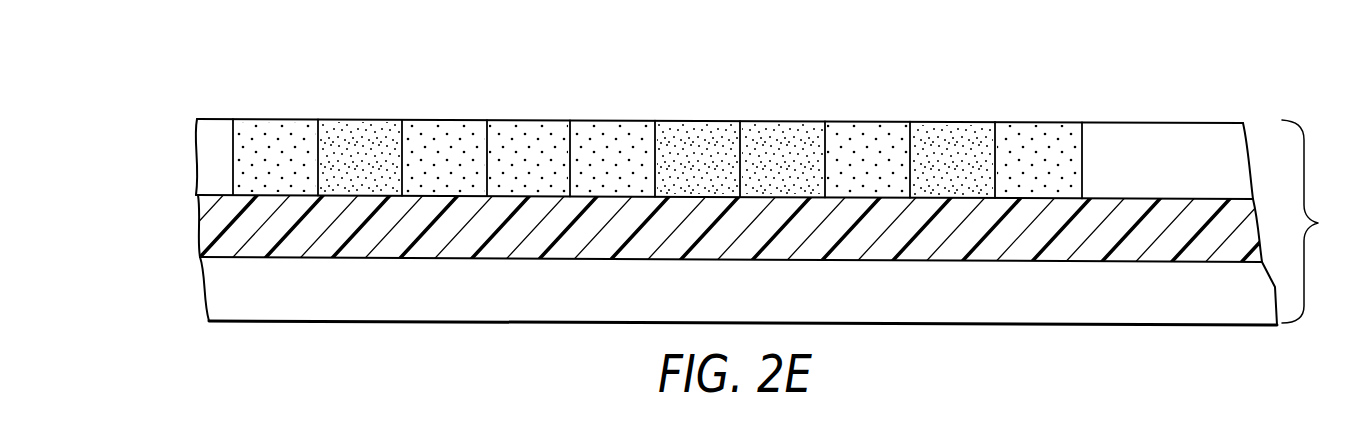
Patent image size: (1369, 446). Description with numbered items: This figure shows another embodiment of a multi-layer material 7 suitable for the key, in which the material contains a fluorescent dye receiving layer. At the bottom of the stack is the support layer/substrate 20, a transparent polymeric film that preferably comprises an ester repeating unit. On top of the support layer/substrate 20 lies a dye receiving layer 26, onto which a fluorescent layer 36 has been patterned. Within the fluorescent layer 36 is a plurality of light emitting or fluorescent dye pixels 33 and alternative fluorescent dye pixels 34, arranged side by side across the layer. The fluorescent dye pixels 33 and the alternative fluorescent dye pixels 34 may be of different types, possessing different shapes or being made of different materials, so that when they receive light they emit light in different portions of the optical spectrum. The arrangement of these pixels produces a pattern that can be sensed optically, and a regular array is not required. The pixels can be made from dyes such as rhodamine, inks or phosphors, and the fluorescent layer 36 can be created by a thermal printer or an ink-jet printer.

The multi-layer material 7 is at (1312, 221).
The support layer/substrate 20 is at (222, 289).
The dye receiving layer 26 is at (210, 217).
The fluorescent dye pixels 33 is at (370, 132).
The alternative fluorescent dye pixels 34 is at (262, 128).
The fluorescent layer 36 is at (1202, 133).